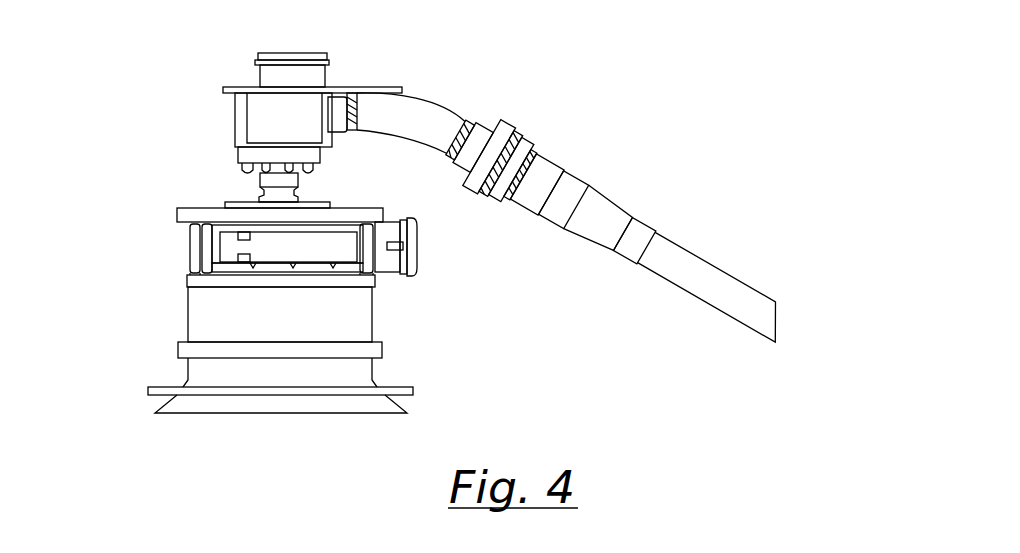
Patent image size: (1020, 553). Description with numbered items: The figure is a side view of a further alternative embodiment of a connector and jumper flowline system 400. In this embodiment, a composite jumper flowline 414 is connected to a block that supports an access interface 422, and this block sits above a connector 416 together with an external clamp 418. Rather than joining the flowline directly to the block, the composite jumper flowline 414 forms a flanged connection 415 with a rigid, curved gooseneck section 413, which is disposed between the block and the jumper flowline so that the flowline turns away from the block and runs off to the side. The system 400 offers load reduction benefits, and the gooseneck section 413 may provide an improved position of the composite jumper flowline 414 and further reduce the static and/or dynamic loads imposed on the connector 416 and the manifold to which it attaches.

The connector and jumper flowline system 400 is at (618, 111).
The access interface 422 is at (327, 74).
The rigid, curved gooseneck section 413 is at (448, 113).
The flanged connection 415 is at (490, 205).
The composite jumper flowline 414 is at (668, 267).
The external clamp 418 is at (220, 245).
The connector 416 is at (213, 312).